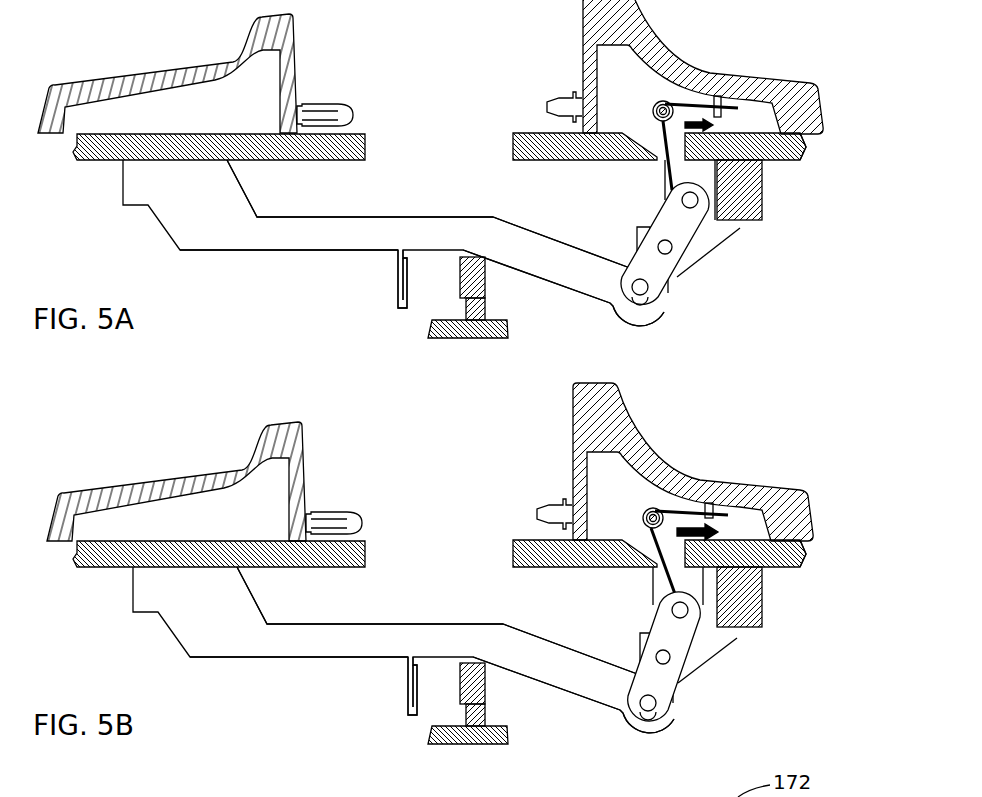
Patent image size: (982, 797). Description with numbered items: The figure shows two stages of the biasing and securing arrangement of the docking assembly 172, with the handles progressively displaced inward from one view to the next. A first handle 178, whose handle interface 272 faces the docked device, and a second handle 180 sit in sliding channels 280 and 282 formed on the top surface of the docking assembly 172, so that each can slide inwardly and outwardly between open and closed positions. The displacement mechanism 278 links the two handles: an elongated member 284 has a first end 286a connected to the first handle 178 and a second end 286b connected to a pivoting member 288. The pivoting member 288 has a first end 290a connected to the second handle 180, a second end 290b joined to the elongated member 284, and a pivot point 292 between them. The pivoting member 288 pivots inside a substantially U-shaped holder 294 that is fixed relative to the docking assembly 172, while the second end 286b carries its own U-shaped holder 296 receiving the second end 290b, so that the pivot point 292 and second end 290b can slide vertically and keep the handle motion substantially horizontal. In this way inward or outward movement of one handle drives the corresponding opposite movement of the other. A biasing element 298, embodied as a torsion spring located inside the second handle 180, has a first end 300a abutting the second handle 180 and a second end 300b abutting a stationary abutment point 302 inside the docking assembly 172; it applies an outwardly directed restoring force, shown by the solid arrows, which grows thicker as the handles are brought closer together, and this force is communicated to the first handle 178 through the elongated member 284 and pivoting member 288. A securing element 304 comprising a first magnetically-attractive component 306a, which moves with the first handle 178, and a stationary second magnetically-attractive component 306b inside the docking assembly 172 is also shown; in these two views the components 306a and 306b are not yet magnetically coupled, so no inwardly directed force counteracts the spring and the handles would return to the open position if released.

In FIG. 5B, the docking assembly 172 is at (788, 395).
In FIG. 5A, the first handle 178 is at (112, 61).
In FIG. 5B, the first handle 178 is at (132, 470).
In FIG. 5A, the second handle 180 is at (797, 74).
In FIG. 5B, the second handle 180 is at (789, 478).
In FIG. 5A, the handle interface 272 is at (329, 89).
In FIG. 5B, the handle interface 272 is at (341, 498).
In FIG. 5A, the displacement mechanism 278 is at (124, 247).
In FIG. 5B, the displacement mechanism 278 is at (147, 658).
In FIG. 5A, the sliding channel 280 is at (87, 167).
In FIG. 5B, the sliding channel 280 is at (96, 572).
In FIG. 5A, the sliding channel 282 is at (504, 137).
In FIG. 5B, the sliding channel 282 is at (506, 547).
In FIG. 5A, the elongated member 284 is at (249, 256).
In FIG. 5B, the elongated member 284 is at (257, 668).
In FIG. 5A, the first end of elongated member 286a is at (251, 187).
In FIG. 5B, the first end of elongated member 286a is at (256, 588).
In FIG. 5A, the second end of elongated member 286b is at (611, 331).
In FIG. 5B, the second end of elongated member 286b is at (610, 736).
In FIG. 5A, the pivoting member 288 is at (658, 223).
In FIG. 5B, the pivoting member 288 is at (658, 641).
In FIG. 5A, the first end of pivoting member 290a is at (680, 197).
In FIG. 5B, the first end of pivoting member 290a is at (670, 606).
In FIG. 5A, the second end of pivoting member 290b is at (651, 290).
In FIG. 5B, the second end of pivoting member 290b is at (659, 703).
In FIG. 5A, the pivot point 292 is at (675, 248).
In FIG. 5B, the pivot point 292 is at (672, 657).
In FIG. 5A, the U-shaped holder 294 is at (744, 229).
In FIG. 5B, the U-shaped holder 294 is at (740, 640).
In FIG. 5A, the U-shaped holder 296 is at (647, 323).
In FIG. 5B, the U-shaped holder 296 is at (657, 735).
In FIG. 5A, the biasing element 298 is at (646, 100).
In FIG. 5B, the biasing element 298 is at (634, 507).
In FIG. 5A, the first end of biasing element 300a is at (728, 95).
In FIG. 5B, the first end of biasing element 300a is at (721, 502).
In FIG. 5A, the second end of biasing element 300b is at (726, 178).
In FIG. 5B, the second end of biasing element 300b is at (803, 558).
In FIG. 5A, the stationary abutment point 302 is at (678, 173).
In FIG. 5B, the stationary abutment point 302 is at (681, 581).
In FIG. 5A, the securing element 304 is at (377, 299).
In FIG. 5B, the securing element 304 is at (389, 706).
In FIG. 5A, the first magnetically-attractive component 306a is at (395, 274).
In FIG. 5B, the first magnetically-attractive component 306a is at (406, 682).
In FIG. 5A, the second magnetically-attractive component 306b is at (473, 281).
In FIG. 5B, the second magnetically-attractive component 306b is at (482, 688).